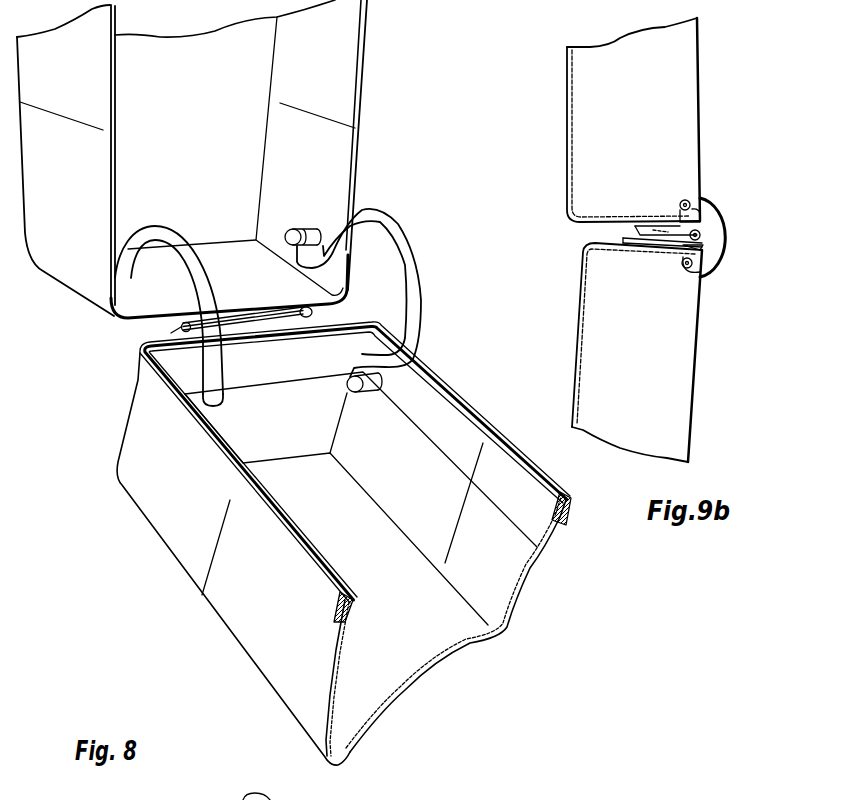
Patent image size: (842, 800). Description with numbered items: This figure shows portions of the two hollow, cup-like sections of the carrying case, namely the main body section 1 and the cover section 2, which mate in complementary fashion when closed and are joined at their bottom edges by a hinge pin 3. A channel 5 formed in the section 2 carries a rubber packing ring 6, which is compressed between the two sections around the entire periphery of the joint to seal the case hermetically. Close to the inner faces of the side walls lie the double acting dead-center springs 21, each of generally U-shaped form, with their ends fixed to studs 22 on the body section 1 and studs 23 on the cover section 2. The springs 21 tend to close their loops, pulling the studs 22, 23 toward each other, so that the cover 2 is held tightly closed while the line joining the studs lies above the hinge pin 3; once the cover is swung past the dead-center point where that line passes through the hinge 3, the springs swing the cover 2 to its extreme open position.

In FIG. 8, the lid (upper container part) 1 is at (345, 90).
In FIG. 9B, the lid (upper container part) 1 is at (678, 63).
In FIG. 8, the container body (lower part) 2 is at (250, 638).
In FIG. 9B, the container body (lower part) 2 is at (683, 355).
In FIG. 8, the hinge pin 3 is at (182, 324).
In FIG. 9B, the hinge pin 3 is at (700, 235).
In FIG. 8, the rim frame 5 is at (490, 432).
In FIG. 8, the rim sealing edge cross-section 6 is at (558, 523).
In FIG. 8, the handle bail 21 is at (420, 340).
In FIG. 9B, the handle bail 21 is at (727, 253).
In FIG. 8, the lid pivot knob 22 is at (293, 229).
In FIG. 9B, the lid pivot knob 22 is at (687, 203).
In FIG. 8, the container pivot knob 23 is at (357, 393).
In FIG. 9B, the container pivot knob 23 is at (693, 267).